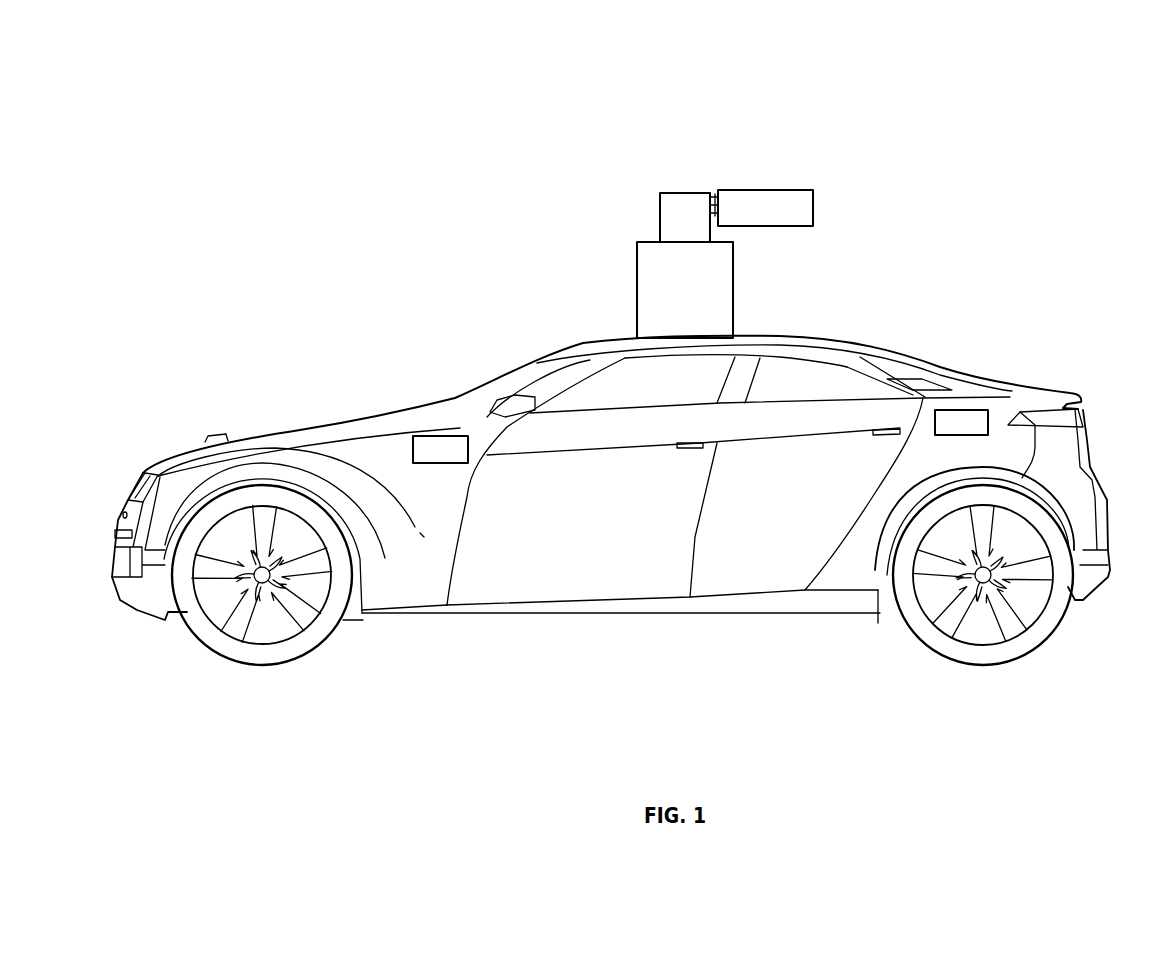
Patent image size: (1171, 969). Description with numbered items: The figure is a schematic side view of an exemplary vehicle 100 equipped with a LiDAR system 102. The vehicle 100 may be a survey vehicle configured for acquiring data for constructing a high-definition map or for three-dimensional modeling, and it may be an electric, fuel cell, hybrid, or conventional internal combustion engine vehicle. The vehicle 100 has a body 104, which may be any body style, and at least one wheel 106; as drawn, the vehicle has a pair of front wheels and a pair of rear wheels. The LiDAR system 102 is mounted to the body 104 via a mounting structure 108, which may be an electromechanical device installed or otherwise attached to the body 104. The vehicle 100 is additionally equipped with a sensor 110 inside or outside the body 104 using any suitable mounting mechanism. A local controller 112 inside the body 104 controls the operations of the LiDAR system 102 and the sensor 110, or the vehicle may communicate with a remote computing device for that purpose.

The vehicle 100 is at (602, 67).
The LiDAR system 102 is at (737, 158).
The body 104 is at (506, 316).
The wheel 106 is at (1096, 630).
The mounting structure 108 is at (743, 304).
The sensor 110 is at (436, 436).
The local controller 112 is at (993, 408).